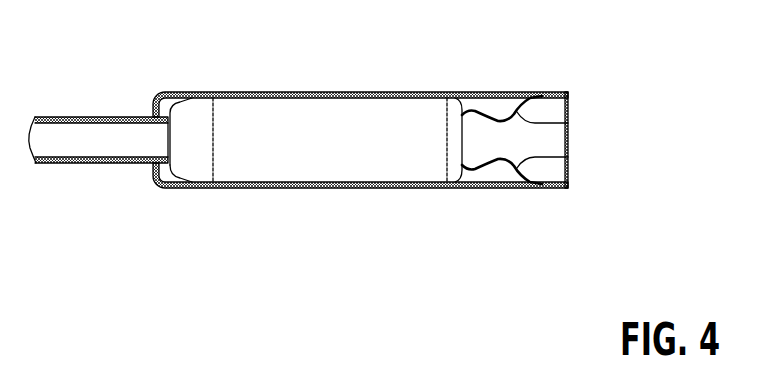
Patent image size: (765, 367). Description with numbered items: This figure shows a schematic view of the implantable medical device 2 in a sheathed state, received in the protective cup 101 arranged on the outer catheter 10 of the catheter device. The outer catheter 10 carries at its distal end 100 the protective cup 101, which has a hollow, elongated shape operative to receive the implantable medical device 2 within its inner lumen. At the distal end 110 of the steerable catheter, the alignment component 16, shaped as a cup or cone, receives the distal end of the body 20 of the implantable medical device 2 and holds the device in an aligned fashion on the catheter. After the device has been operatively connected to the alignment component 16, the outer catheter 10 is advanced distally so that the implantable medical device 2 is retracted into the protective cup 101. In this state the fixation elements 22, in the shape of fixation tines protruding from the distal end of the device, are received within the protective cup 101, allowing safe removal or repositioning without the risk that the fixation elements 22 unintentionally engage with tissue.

The implantable medical device 2 is at (391, 134).
The outer catheter 10 is at (98, 135).
The alignment component 16 is at (198, 170).
The body 20 is at (328, 172).
The fixation elements 22 is at (568, 123).
The distal end 100 is at (138, 117).
The protective cup 101 is at (402, 92).
The distal end 110 is at (165, 145).